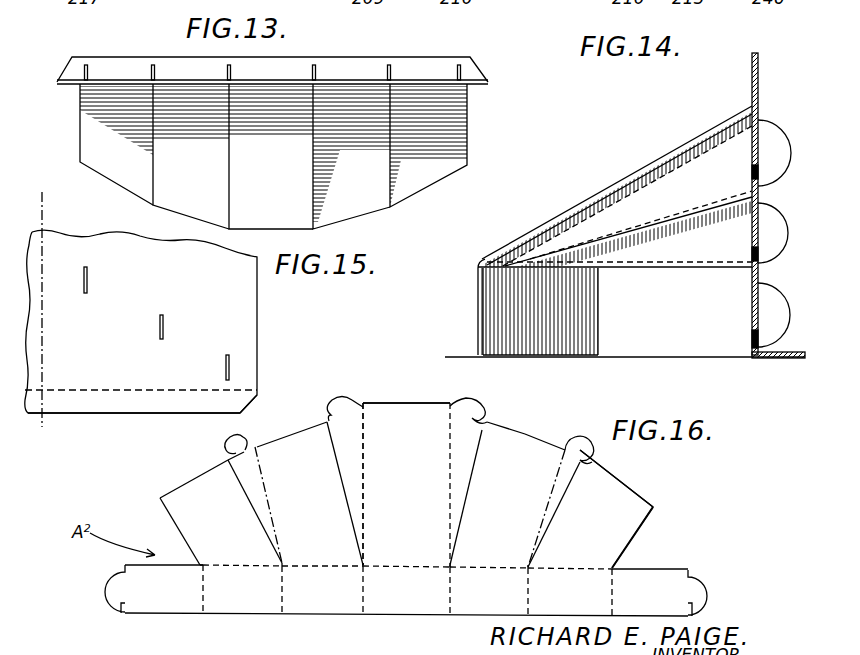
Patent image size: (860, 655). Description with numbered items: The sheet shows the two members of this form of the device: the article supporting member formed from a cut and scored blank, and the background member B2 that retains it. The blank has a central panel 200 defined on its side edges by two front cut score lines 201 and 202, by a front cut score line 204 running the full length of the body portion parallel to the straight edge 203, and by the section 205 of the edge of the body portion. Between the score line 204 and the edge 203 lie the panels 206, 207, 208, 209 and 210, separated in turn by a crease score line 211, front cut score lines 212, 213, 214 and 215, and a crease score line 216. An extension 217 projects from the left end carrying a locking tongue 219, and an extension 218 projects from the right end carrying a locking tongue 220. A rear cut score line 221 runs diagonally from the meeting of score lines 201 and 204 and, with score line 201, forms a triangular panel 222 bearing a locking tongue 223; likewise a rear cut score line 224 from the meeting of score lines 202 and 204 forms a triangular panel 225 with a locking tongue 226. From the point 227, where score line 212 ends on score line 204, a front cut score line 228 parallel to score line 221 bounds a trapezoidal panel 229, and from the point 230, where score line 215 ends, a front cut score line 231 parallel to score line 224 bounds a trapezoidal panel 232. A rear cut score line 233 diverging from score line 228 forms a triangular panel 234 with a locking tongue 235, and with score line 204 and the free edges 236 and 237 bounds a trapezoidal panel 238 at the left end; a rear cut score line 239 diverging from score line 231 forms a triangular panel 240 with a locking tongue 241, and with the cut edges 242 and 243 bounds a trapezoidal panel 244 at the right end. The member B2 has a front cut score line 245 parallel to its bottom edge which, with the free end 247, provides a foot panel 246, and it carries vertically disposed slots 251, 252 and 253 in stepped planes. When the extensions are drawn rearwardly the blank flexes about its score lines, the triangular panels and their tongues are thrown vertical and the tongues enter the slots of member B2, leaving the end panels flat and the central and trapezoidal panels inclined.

In FIG. 13, the central panel 200 is at (271, 156).
In FIG. 14, the central panel 200 is at (648, 170).
In FIG. 16, the central panel 200 is at (406, 485).
In FIG. 16, the front cut score line 201 is at (376, 406).
In FIG. 16, the front cut score line 202 is at (450, 430).
In FIG. 16, the straight edge 203 is at (408, 614).
In FIG. 16, the front cut score line 204 is at (183, 562).
In FIG. 16, the edge section 205 is at (405, 402).
In FIG. 14, the panel 206 is at (563, 308).
In FIG. 16, the panel 206 is at (190, 582).
In FIG. 14, the panel 207 is at (497, 305).
In FIG. 16, the panel 207 is at (269, 582).
In FIG. 14, the panel 208 is at (478, 287).
In FIG. 16, the panel 208 is at (348, 583).
In FIG. 16, the panel 209 is at (430, 581).
In FIG. 16, the panel 210 is at (514, 581).
In FIG. 16, the crease score line 211 is at (201, 602).
In FIG. 16, the front cut score line 212 is at (280, 602).
In FIG. 16, the front cut score line 213 is at (352, 607).
In FIG. 16, the front cut score line 214 is at (452, 604).
In FIG. 16, the front cut score line 215 is at (528, 596).
In FIG. 16, the crease score line 216 is at (612, 600).
In FIG. 14, the extension 217 is at (671, 342).
In FIG. 16, the extension 217 is at (146, 606).
In FIG. 16, the extension 218 is at (656, 572).
In FIG. 13, the locking tongue 219 is at (82, 68).
In FIG. 14, the locking tongue 219 is at (773, 305).
In FIG. 16, the locking tongue 219 is at (106, 584).
In FIG. 13, the locking tongue 220 is at (458, 66).
In FIG. 16, the locking tongue 220 is at (708, 596).
In FIG. 16, the rear cut score line 221 is at (336, 473).
In FIG. 14, the triangular panel 222 is at (615, 206).
In FIG. 16, the triangular panel 222 is at (348, 444).
In FIG. 13, the locking tongue 223 is at (227, 66).
In FIG. 14, the locking tongue 223 is at (773, 134).
In FIG. 16, the locking tongue 223 is at (340, 397).
In FIG. 16, the rear cut score line 224 is at (473, 482).
In FIG. 16, the triangular panel 225 is at (487, 422).
In FIG. 13, the locking tongue 226 is at (312, 66).
In FIG. 16, the locking tongue 226 is at (478, 400).
In FIG. 16, the point 227 is at (283, 560).
In FIG. 16, the front cut score line 228 is at (265, 444).
In FIG. 13, the trapezoidal panel 229 is at (191, 156).
In FIG. 16, the trapezoidal panel 229 is at (277, 452).
In FIG. 16, the point 230 is at (528, 562).
In FIG. 16, the front cut score line 231 is at (546, 504).
In FIG. 13, the trapezoidal panel 232 is at (351, 156).
In FIG. 16, the trapezoidal panel 232 is at (531, 447).
In FIG. 16, the rear cut score line 233 is at (247, 503).
In FIG. 14, the triangular panel 234 is at (619, 229).
In FIG. 16, the triangular panel 234 is at (232, 460).
In FIG. 13, the locking tongue 235 is at (151, 66).
In FIG. 14, the locking tongue 235 is at (773, 222).
In FIG. 16, the locking tongue 235 is at (228, 446).
In FIG. 16, the free edge 236 is at (178, 488).
In FIG. 16, the free edge 237 is at (172, 529).
In FIG. 13, the trapezoidal panel 238 is at (95, 131).
In FIG. 16, the trapezoidal panel 238 is at (172, 506).
In FIG. 16, the rear cut score line 239 is at (578, 488).
In FIG. 16, the triangular panel 240 is at (586, 466).
In FIG. 13, the locking tongue 241 is at (389, 65).
In FIG. 16, the locking tongue 241 is at (576, 440).
In FIG. 16, the cut edge 242 is at (618, 488).
In FIG. 16, the cut edge 243 is at (655, 513).
In FIG. 13, the trapezoidal panel 244 is at (445, 143).
In FIG. 16, the trapezoidal panel 244 is at (616, 509).
In FIG. 15, the front cut score line 245 is at (76, 390).
In FIG. 13, the panel 246 is at (272, 70).
In FIG. 14, the panel 246 is at (788, 359).
In FIG. 15, the panel 246 is at (64, 406).
In FIG. 15, the free end 247 is at (113, 413).
In FIG. 15, the slot 251 is at (88, 287).
In FIG. 15, the slot 252 is at (164, 320).
In FIG. 15, the slot 253 is at (226, 362).
In FIG. 13, the member B2 is at (476, 73).
In FIG. 14, the member B2 is at (760, 73).
In FIG. 15, the member B2 is at (250, 308).